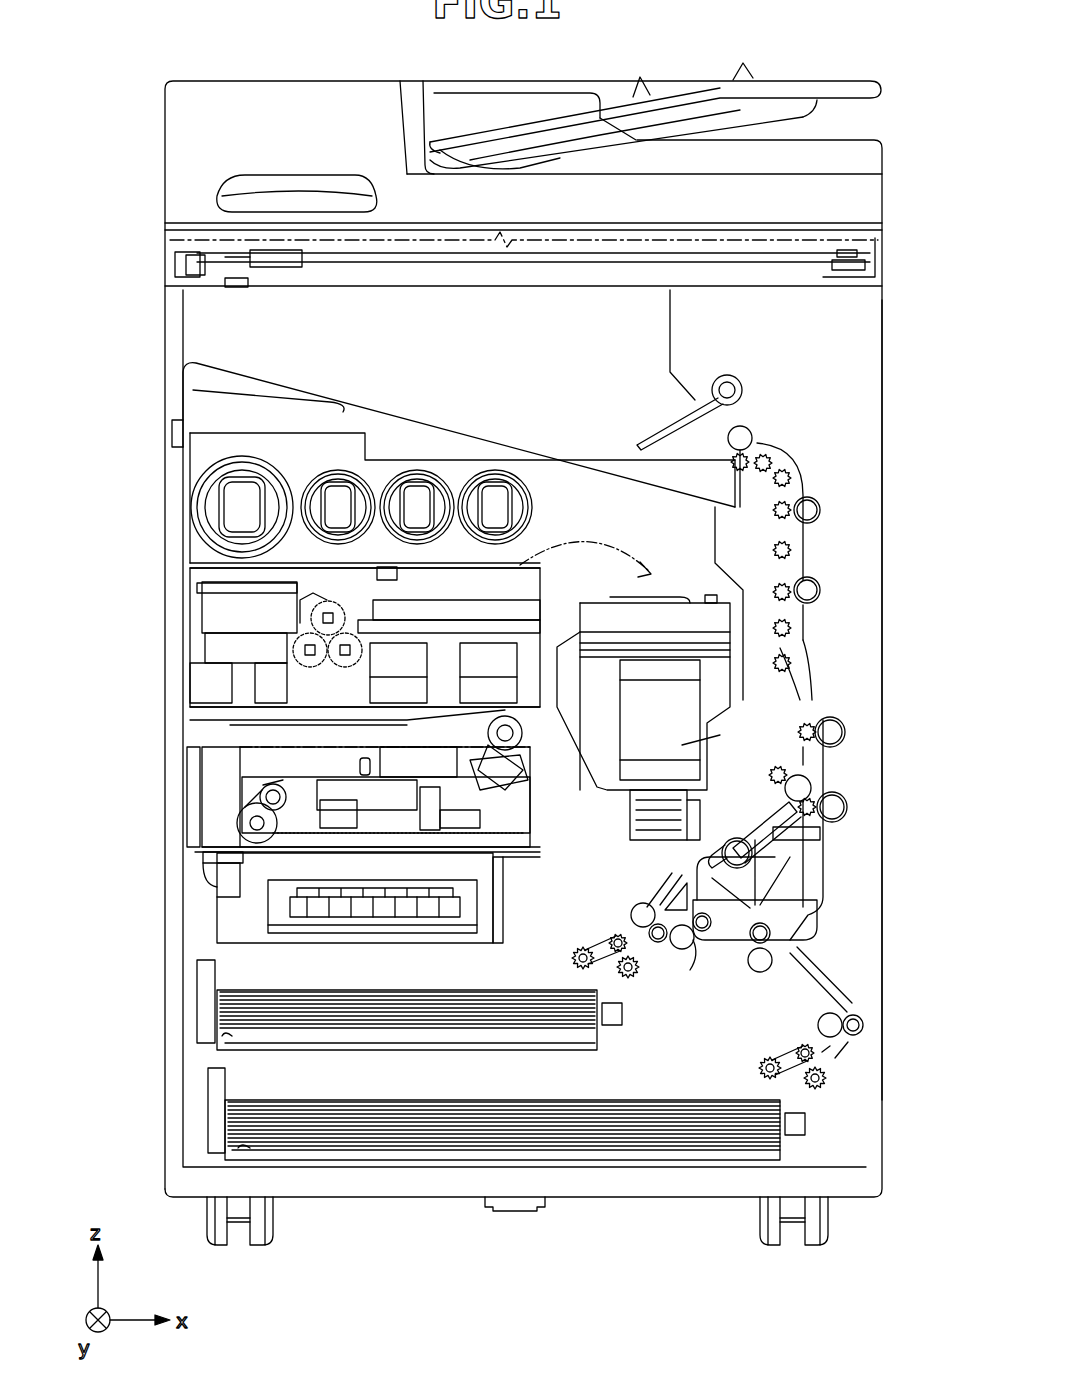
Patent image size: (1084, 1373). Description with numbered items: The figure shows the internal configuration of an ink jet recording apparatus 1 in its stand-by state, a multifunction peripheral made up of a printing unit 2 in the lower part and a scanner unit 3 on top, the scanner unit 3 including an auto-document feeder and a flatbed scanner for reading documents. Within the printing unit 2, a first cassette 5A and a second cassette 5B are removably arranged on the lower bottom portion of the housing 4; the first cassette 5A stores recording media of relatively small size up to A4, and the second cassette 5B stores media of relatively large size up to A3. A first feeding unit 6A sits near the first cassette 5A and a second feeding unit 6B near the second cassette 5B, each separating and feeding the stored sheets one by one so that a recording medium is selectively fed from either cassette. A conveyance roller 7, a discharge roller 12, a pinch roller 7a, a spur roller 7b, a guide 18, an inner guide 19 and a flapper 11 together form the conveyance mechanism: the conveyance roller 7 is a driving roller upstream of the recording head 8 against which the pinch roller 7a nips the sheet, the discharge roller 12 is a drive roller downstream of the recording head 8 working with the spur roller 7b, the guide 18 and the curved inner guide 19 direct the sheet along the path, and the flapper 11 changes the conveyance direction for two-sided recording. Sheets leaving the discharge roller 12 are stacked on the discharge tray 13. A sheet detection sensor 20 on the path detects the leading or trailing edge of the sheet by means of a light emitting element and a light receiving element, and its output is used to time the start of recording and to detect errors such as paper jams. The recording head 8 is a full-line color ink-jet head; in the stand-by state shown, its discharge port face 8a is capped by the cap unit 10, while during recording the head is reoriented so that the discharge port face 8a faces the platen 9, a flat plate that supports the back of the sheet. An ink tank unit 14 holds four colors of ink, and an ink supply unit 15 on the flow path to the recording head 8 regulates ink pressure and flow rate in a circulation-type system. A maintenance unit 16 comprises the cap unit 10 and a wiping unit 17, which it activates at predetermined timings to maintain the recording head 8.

The ink jet recording apparatus 1 is at (812, 72).
The printing unit 2 is at (165, 286).
The scanner unit 3 is at (90, 84).
The housing 4 is at (884, 346).
The first cassette 5A is at (210, 997).
The second cassette 5B is at (210, 1115).
The first feeding unit 6A is at (628, 978).
The second feeding unit 6B is at (826, 1080).
The conveyance roller 7 is at (848, 807).
The pinch roller 7a is at (660, 943).
The spur roller 7b is at (792, 627).
The recording head 8 is at (846, 732).
The discharge port face 8a is at (682, 827).
The platen 9 is at (752, 855).
The cap unit 10 is at (760, 838).
The flapper 11 is at (810, 685).
The discharge roller 12 is at (742, 434).
The discharge tray 13 is at (453, 435).
The ink tank unit 14 is at (192, 470).
The ink supply unit 15 is at (192, 645).
The maintenance unit 16 is at (210, 910).
The wiping unit 17 is at (205, 767).
The guide 18 is at (812, 549).
The inner guide 19 is at (800, 945).
The sheet detection sensor 20 is at (790, 925).